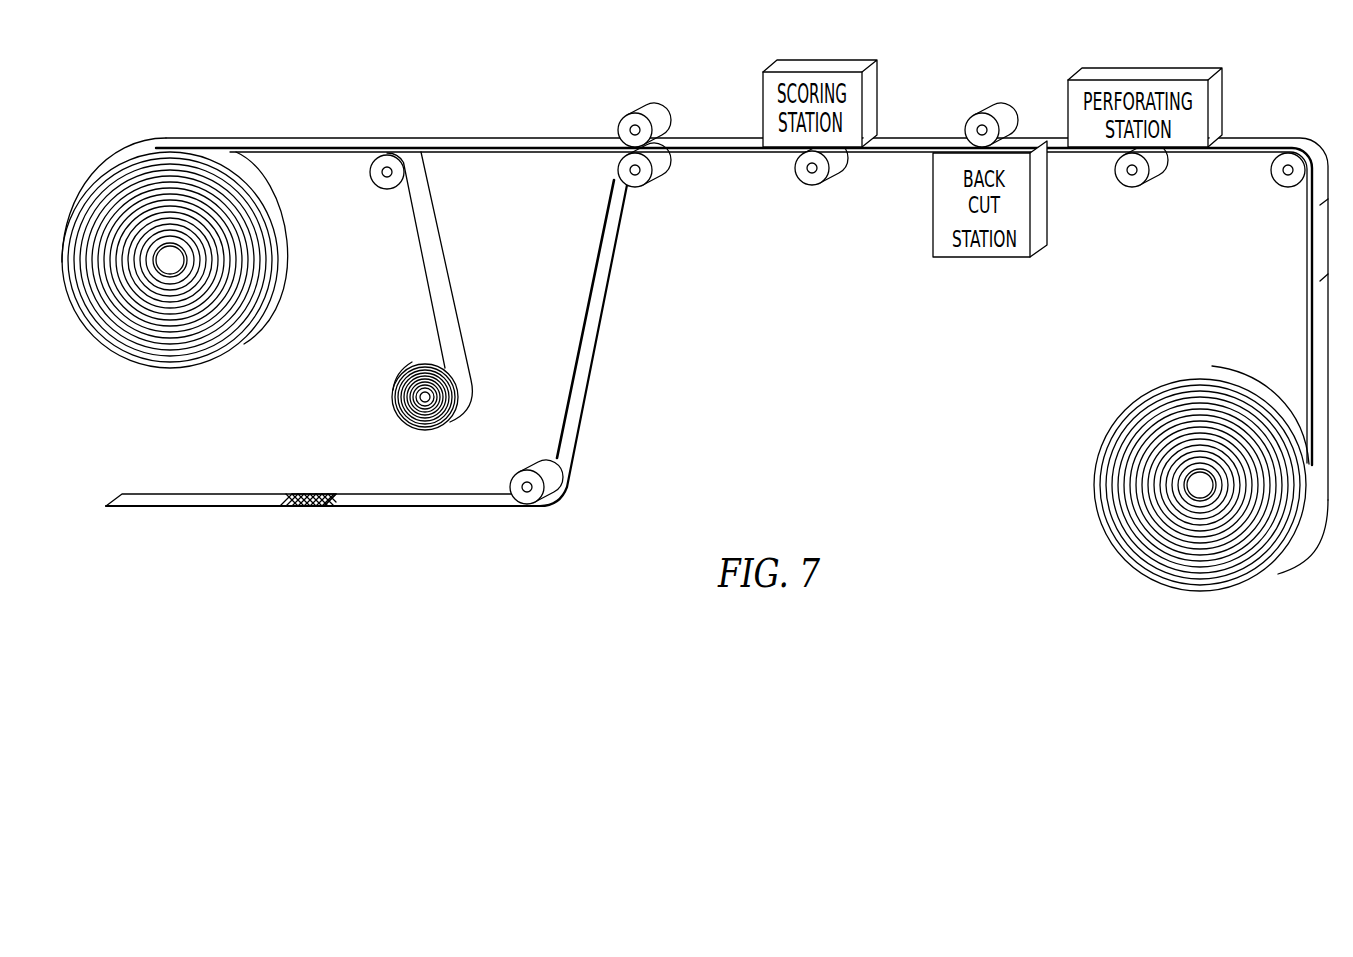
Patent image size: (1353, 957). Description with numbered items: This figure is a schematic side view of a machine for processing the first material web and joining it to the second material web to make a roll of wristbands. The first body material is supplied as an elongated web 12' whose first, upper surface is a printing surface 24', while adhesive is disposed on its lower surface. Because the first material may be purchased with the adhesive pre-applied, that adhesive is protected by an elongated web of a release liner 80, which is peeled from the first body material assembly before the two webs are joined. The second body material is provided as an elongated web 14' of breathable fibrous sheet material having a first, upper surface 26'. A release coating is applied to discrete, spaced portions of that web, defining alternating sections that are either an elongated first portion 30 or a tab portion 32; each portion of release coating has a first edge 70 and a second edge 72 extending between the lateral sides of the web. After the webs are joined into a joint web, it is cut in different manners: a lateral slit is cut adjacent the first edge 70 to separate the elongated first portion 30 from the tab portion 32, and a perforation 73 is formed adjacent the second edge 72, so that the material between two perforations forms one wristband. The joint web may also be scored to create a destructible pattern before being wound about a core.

The elongated web of first body material 12' is at (175, 228).
The first upper surface 26' is at (747, 291).
The printing surface 24' is at (734, 272).
The release liner 80 is at (437, 250).
The elongated first portion 30 is at (570, 418).
The elongated web of second body material 14' is at (308, 475).
The first edge 70 is at (293, 495).
The tab portion 32 is at (306, 496).
The second edge 72 is at (335, 495).
The perforation 73 is at (1235, 148).